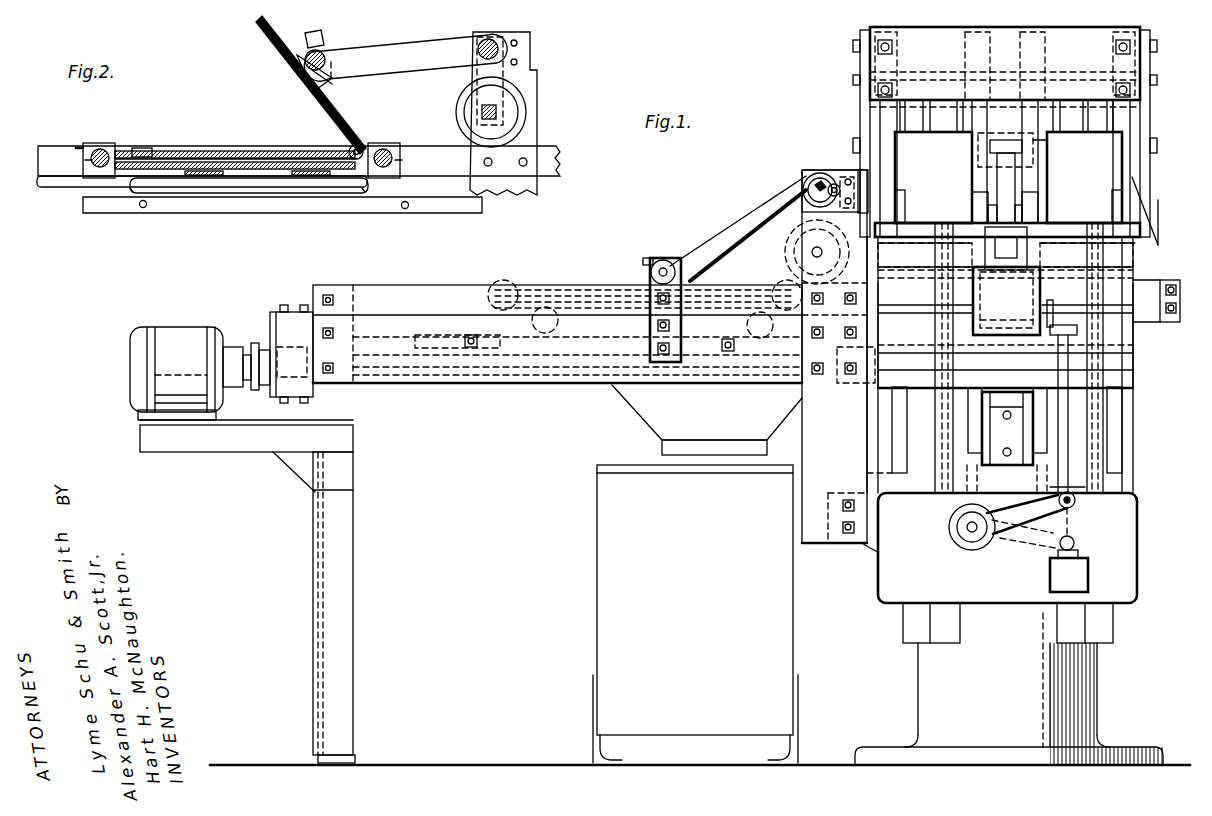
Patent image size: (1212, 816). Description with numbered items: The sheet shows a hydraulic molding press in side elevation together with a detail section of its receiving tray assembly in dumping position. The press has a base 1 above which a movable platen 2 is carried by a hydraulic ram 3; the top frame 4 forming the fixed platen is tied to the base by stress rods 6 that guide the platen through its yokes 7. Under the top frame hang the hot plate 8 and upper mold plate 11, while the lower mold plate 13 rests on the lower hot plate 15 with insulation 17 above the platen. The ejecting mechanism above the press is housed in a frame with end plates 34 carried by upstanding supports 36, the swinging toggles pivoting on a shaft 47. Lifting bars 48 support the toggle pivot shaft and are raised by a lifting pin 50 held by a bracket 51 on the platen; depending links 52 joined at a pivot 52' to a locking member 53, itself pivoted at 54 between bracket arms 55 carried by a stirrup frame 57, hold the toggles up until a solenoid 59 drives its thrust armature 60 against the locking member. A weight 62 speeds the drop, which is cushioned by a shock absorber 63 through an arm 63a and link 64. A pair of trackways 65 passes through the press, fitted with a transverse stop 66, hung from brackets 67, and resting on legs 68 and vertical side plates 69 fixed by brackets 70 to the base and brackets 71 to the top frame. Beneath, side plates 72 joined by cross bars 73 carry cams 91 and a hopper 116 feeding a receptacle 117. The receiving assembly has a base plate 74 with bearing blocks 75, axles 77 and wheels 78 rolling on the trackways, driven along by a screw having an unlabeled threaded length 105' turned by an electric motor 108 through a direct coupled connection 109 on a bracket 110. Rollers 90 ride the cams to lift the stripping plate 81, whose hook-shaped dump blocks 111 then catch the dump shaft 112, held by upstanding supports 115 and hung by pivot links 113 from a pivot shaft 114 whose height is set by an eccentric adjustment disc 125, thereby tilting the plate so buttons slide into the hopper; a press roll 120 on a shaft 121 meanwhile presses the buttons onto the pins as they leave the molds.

In FIG. 1, the base 1 is at (1122, 585).
In FIG. 1, the movable platen 2 is at (1112, 432).
In FIG. 1, the hydraulic ram 3 is at (1052, 488).
In FIG. 1, the stationary frame 4 is at (1120, 163).
In FIG. 1, the stress rods 6 is at (925, 398).
In FIG. 1, the yokes 7 is at (900, 432).
In FIG. 1, the hot plate 8 is at (1135, 250).
In FIG. 1, the mold plate 11 is at (1133, 272).
In FIG. 1, the lower mold plate 13 is at (1133, 358).
In FIG. 1, the lower hot plate 15 is at (1135, 376).
In FIG. 1, the insulation 17 is at (1133, 390).
In FIG. 1, the end plates 34 is at (870, 60).
In FIG. 1, the upstanding supports 36 is at (866, 105).
In FIG. 1, the shaft 47 is at (1157, 78).
In FIG. 1, the lifting bars 48 is at (975, 140).
In FIG. 1, the lifting pin 50 is at (995, 402).
In FIG. 1, the bracket 51 is at (985, 435).
In FIG. 1, the depending links 52 is at (979, 153).
In FIG. 1, the pivot 52' is at (1056, 142).
In FIG. 1, the locking member 53 is at (1010, 182).
In FIG. 1, the pivot 54 is at (1032, 205).
In FIG. 1, the bracket arms 55 is at (975, 205).
In FIG. 1, the stirrup frame 57 is at (1148, 210).
In FIG. 1, the solenoid 59 is at (950, 288).
In FIG. 1, the thrust armature 60 is at (1015, 247).
In FIG. 1, the weight 62 is at (1006, 301).
In FIG. 1, the shock absorber 63 is at (960, 538).
In FIG. 1, the arm 63a is at (1010, 550).
In FIG. 1, the link 64 is at (1062, 432).
In FIG. 2, the trackways 65 is at (548, 152).
In FIG. 1, the trackways 65 is at (425, 300).
In FIG. 1, the transverse stop 66 is at (1165, 322).
In FIG. 1, the brackets 67 is at (1140, 232).
In FIG. 1, the supporting legs 68 is at (315, 555).
In FIG. 2, the vertical side plates 69 is at (525, 86).
In FIG. 1, the vertical side plates 69 is at (800, 520).
In FIG. 1, the brackets 70 is at (868, 550).
In FIG. 1, the brackets 71 is at (848, 170).
In FIG. 1, the side plates 72 is at (430, 385).
In FIG. 1, the cross bars 73 is at (275, 315).
In FIG. 2, the base plate 74 is at (240, 172).
In FIG. 1, the base plate 74 is at (575, 290).
In FIG. 2, the bearing blocks 75 is at (82, 147).
In FIG. 2, the axles 77 is at (85, 160).
In FIG. 2, the wheels 78 is at (112, 144).
In FIG. 1, the wheels 78 is at (506, 282).
In FIG. 2, the stripping plate 81 is at (316, 92).
In FIG. 2, the rollers 90 is at (133, 192).
In FIG. 1, the rollers 90 is at (455, 392).
In FIG. 2, the cams 91 is at (290, 206).
In FIG. 1, the cams 91 is at (575, 388).
In FIG. 1, the slot 105' is at (465, 375).
In FIG. 1, the electric motor 108 is at (162, 330).
In FIG. 1, the direct coupled connection 109 is at (250, 348).
In FIG. 1, the bracket 110 is at (212, 452).
In FIG. 2, the dump blocks 111 is at (332, 84).
In FIG. 1, the dump blocks 111 is at (700, 244).
In FIG. 2, the dump shaft 112 is at (323, 55).
In FIG. 1, the dump shaft 112 is at (655, 262).
In FIG. 2, the pivot links 113 is at (408, 68).
In FIG. 1, the pivot links 113 is at (745, 218).
In FIG. 2, the pivot shaft 114 is at (500, 47).
In FIG. 1, the upstanding supports 115 is at (665, 365).
In FIG. 1, the hopper 116 is at (645, 425).
In FIG. 1, the receptacle 117 is at (612, 585).
In FIG. 2, the press roll 120 is at (468, 115).
In FIG. 1, the press roll 120 is at (790, 248).
In FIG. 2, the shaft 121 is at (497, 113).
In FIG. 1, the eccentric adjustment disc 125 is at (815, 178).